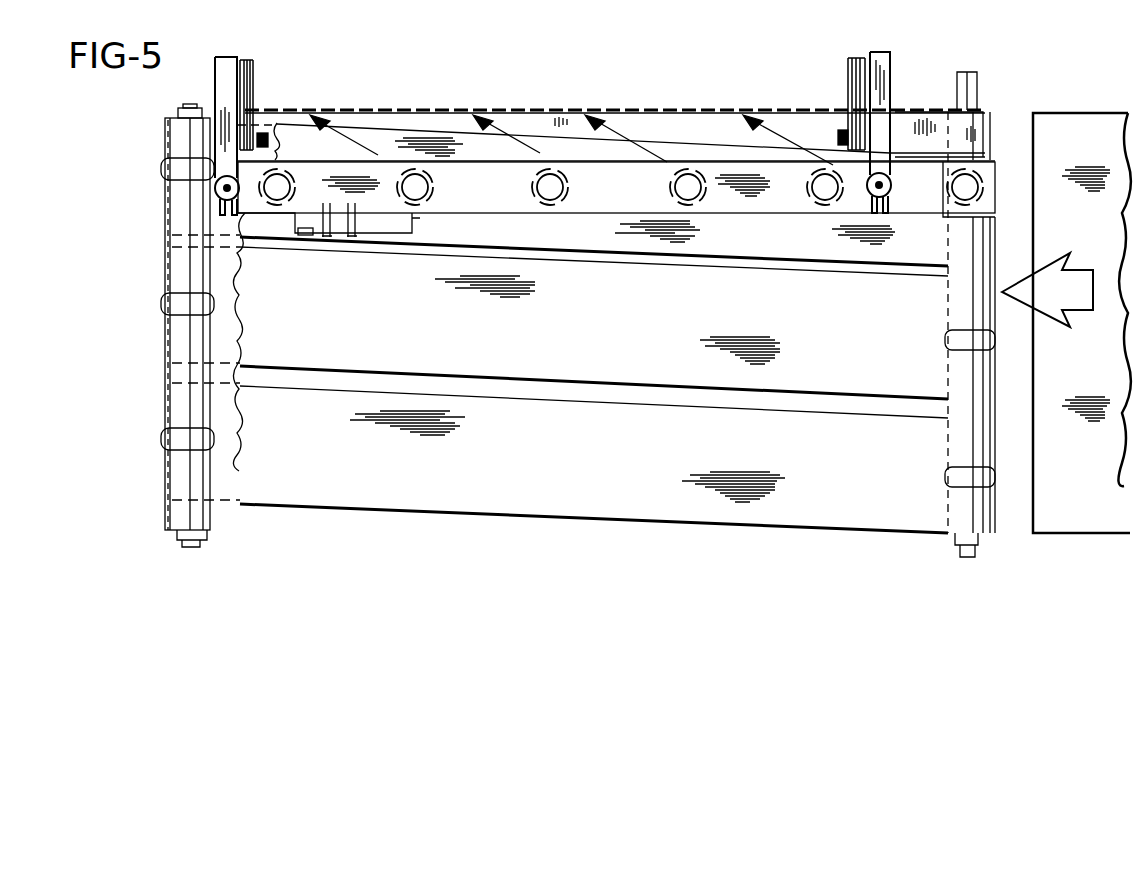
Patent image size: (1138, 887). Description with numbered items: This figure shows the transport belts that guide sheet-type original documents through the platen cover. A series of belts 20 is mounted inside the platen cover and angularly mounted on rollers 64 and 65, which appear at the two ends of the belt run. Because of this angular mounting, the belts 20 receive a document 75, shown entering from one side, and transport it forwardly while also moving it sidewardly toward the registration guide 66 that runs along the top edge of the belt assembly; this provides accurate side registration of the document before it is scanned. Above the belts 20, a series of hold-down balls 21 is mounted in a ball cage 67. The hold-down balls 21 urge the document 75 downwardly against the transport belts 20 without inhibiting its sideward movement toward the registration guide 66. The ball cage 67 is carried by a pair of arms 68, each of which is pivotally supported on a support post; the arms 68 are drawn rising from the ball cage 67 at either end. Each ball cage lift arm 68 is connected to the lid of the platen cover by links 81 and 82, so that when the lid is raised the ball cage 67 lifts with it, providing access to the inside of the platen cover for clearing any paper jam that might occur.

The belts 20 is at (630, 334).
The hold-down balls 21 is at (533, 183).
The roller 64 is at (178, 517).
The roller 65 is at (950, 545).
The registration guide 66 is at (683, 109).
The ball cage 67 is at (608, 198).
The arms 68 is at (228, 68).
The document 75 is at (1068, 527).
The link 81 is at (243, 58).
The link 82 is at (255, 92).